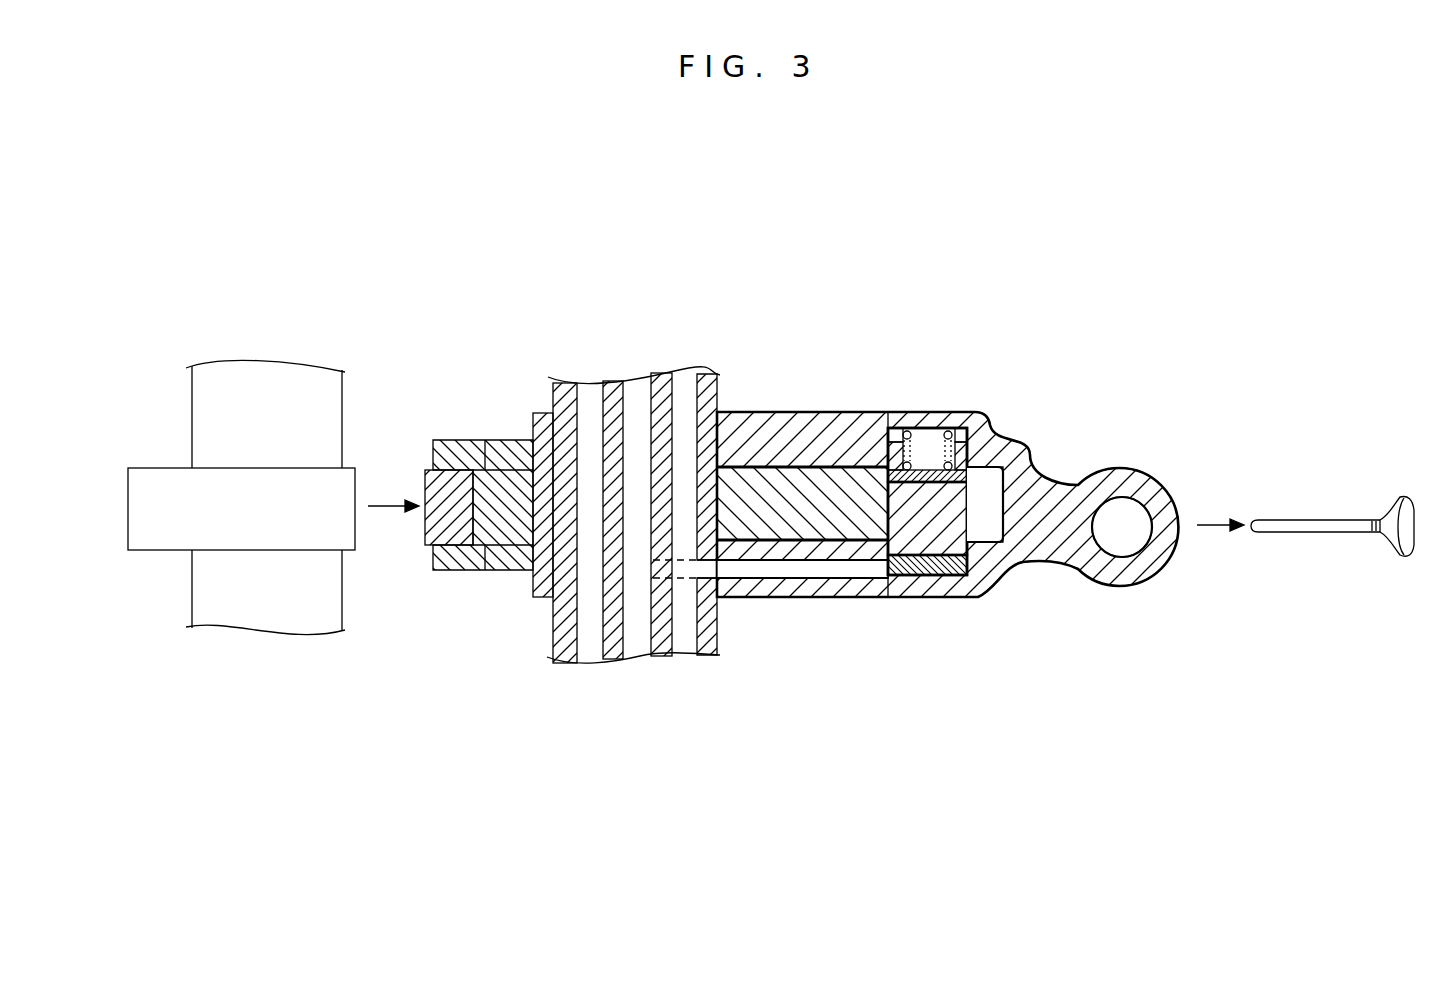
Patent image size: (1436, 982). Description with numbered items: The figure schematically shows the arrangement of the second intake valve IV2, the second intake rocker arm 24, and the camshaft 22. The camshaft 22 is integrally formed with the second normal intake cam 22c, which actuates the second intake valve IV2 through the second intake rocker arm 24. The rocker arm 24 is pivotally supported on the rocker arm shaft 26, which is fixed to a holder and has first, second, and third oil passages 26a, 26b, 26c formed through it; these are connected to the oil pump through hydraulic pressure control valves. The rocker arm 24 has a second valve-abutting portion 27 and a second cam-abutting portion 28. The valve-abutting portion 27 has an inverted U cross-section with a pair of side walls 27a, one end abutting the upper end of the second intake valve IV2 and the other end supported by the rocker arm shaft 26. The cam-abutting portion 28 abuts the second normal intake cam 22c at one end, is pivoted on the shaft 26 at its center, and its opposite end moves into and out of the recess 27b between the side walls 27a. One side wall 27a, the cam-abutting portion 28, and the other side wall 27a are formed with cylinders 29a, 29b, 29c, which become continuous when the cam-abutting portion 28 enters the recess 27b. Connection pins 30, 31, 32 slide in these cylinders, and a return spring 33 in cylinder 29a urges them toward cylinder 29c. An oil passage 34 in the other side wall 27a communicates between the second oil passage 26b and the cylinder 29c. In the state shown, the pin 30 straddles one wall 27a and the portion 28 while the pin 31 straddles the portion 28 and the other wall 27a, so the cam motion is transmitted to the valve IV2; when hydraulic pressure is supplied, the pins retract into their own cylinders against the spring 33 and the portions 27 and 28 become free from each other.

The camshaft 22 is at (350, 392).
The second normal intake cam 22c is at (350, 498).
The second intake rocker arm 24 is at (1062, 282).
The rocker arm shaft 26 is at (708, 400).
The first oil passage 26a is at (683, 392).
The second oil passage 26b is at (634, 390).
The third oil passage 26c is at (590, 392).
The second valve-abutting portion 27 is at (947, 507).
The side wall 27a is at (875, 427).
The recess 27b is at (818, 470).
The second cam-abutting portion 28 is at (518, 512).
The cylinder 29a is at (957, 440).
The cylinder 29b is at (970, 560).
The cylinder 29c is at (950, 582).
The connection pin 30 is at (985, 440).
The connection pin 31 is at (868, 548).
The connection pin 32 is at (925, 580).
The return spring 33 is at (925, 438).
The oil passage 34 is at (752, 574).
The second intake valve IV2 is at (1320, 533).